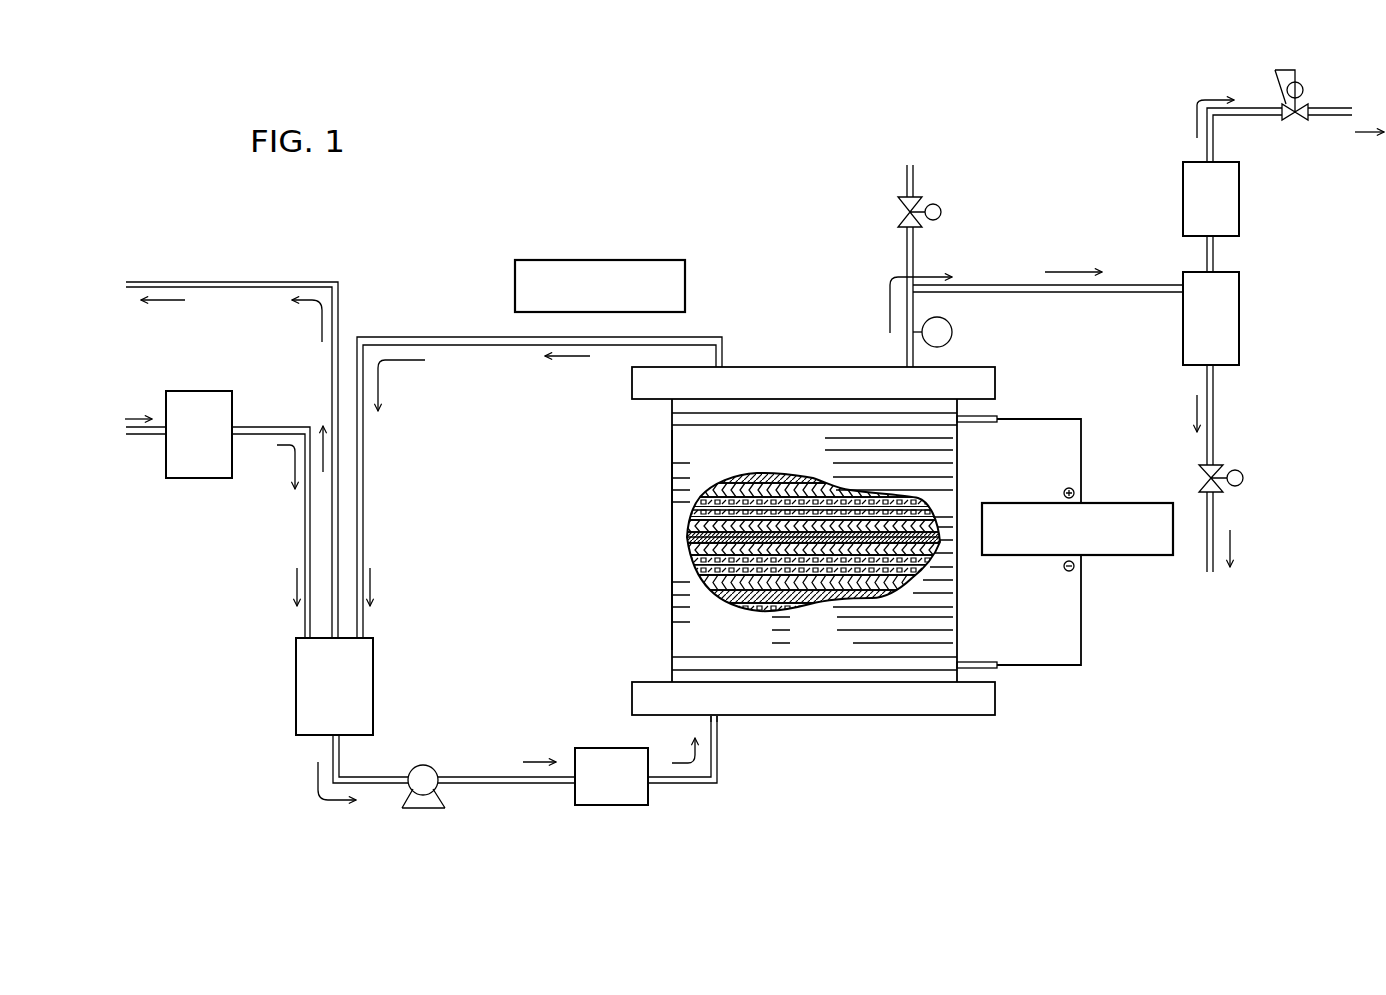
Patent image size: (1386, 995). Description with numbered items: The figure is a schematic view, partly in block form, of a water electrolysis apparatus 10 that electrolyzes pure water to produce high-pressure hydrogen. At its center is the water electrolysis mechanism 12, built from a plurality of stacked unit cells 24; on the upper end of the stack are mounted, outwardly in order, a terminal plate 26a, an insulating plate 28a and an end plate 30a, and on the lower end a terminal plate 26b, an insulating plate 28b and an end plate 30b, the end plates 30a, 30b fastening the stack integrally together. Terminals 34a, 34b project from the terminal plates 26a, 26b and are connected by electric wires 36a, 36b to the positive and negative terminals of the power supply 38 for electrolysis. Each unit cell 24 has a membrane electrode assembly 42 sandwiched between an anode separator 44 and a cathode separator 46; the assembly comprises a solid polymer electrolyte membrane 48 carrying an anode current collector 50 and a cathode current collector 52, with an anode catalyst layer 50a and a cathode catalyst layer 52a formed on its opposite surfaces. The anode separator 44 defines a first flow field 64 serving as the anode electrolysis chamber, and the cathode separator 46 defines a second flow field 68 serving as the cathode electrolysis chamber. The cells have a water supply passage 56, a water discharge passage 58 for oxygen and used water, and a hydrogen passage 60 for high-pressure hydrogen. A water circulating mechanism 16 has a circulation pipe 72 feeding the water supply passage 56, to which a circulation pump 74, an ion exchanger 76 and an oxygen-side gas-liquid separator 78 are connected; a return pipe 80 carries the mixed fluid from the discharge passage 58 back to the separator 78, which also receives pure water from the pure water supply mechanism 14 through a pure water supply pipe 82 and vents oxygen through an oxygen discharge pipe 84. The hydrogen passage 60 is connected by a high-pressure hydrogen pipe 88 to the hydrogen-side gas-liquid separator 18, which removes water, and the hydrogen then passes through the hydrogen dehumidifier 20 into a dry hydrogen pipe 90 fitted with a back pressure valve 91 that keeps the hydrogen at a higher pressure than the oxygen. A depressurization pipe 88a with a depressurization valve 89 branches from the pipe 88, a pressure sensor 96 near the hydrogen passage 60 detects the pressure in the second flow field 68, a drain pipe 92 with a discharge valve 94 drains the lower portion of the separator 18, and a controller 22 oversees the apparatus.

The water electrolysis apparatus 10 is at (493, 209).
The water electrolysis mechanism 12 is at (764, 318).
The pure water supply mechanism 14 is at (197, 479).
The water circulating mechanism 16 is at (664, 808).
The hydrogen-side gas-liquid separator 18 is at (1240, 312).
The hydrogen dehumidifier 20 is at (1240, 200).
The controller 22 is at (665, 260).
The unit cell 24 is at (669, 589).
The terminal plate 26a is at (842, 415).
The terminal plate 26b is at (833, 660).
The insulating plate 28a is at (810, 405).
The insulating plate 28b is at (808, 672).
The end plate 30a is at (969, 364).
The end plate 30b is at (969, 717).
The terminal 34a is at (976, 423).
The terminal 34b is at (973, 662).
The electric wire 36a is at (1081, 435).
The electric wire 36b is at (1081, 603).
The power supply for electrolysis 38 is at (1098, 503).
The membrane electrode assembly 42 is at (628, 502).
The anode separator 44 is at (778, 497).
The cathode separator 46 is at (782, 565).
The solid polymer electrolyte membrane 48 is at (688, 540).
The anode current collector 50 is at (688, 530).
The anode catalyst layer 50a is at (803, 477).
The cathode current collector 52 is at (688, 550).
The cathode catalyst layer 52a is at (812, 603).
The water supply passage 56 is at (720, 716).
The water discharge passage 58 is at (727, 367).
The hydrogen passage 60 is at (905, 367).
The first flow field 64 is at (735, 498).
The second flow field 68 is at (708, 590).
The circulation pipe 72 is at (477, 777).
The circulation pump 74 is at (422, 764).
The ion exchanger 76 is at (592, 748).
The oxygen-side gas-liquid separator 78 is at (374, 688).
The return pipe 80 is at (488, 346).
The pure water supply pipe 82 is at (264, 437).
The oxygen discharge pipe 84 is at (253, 282).
The high-pressure hydrogen pipe 88 is at (1127, 287).
The depressurization pipe 88a is at (907, 260).
The depressurization valve 89 is at (897, 213).
The dry hydrogen pipe 90 is at (1214, 147).
The back pressure valve 91 is at (1297, 122).
The drain pipe 92 is at (1215, 418).
The discharge valve 94 is at (1200, 478).
The pressure sensor 96 is at (952, 331).